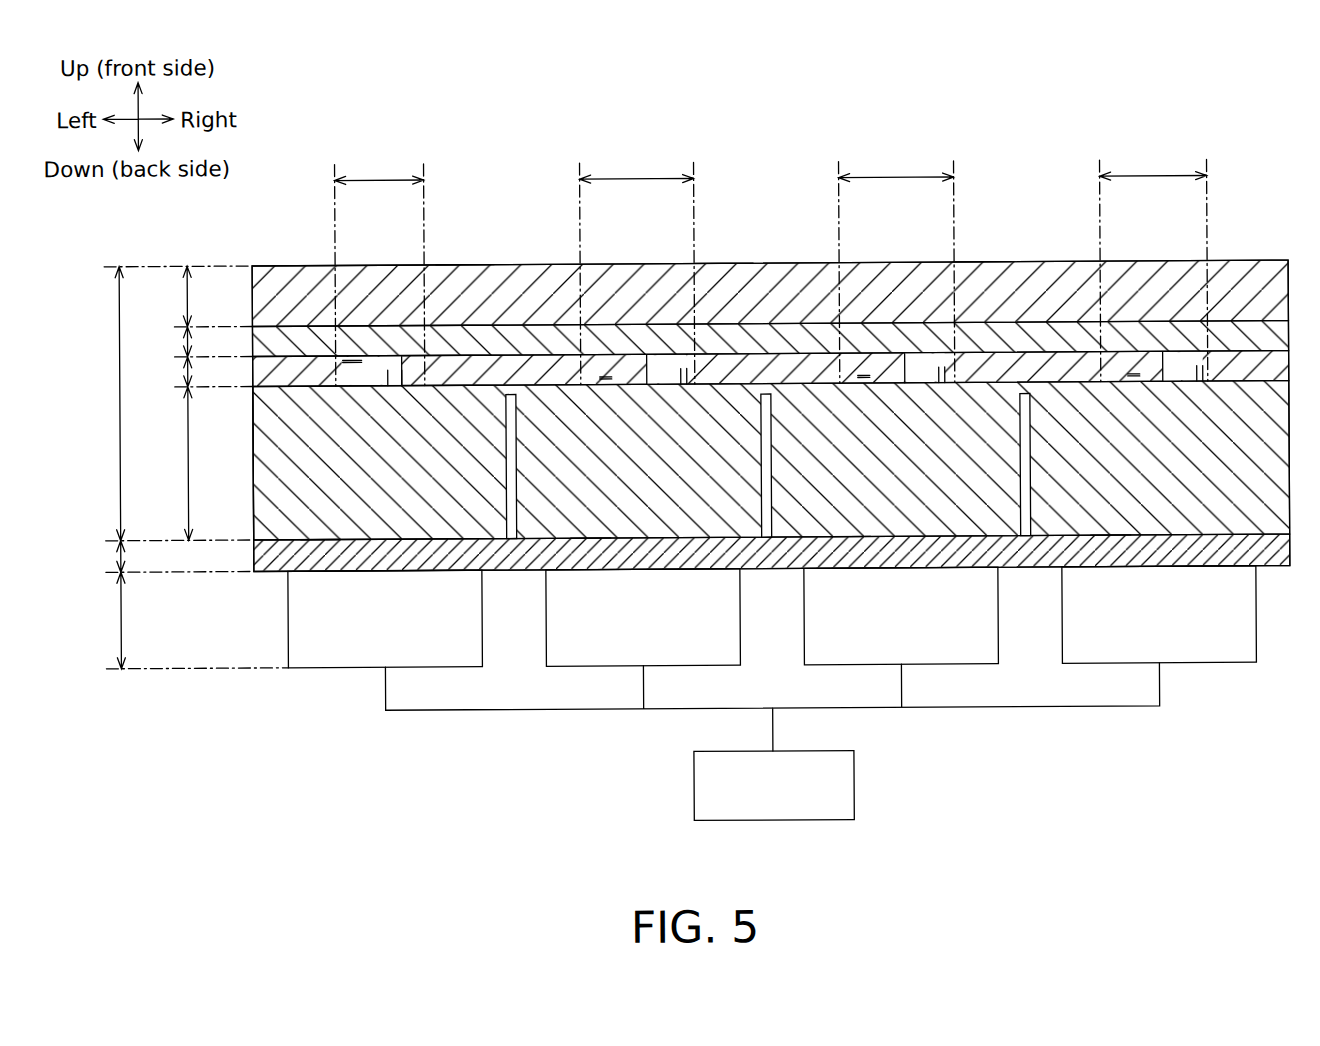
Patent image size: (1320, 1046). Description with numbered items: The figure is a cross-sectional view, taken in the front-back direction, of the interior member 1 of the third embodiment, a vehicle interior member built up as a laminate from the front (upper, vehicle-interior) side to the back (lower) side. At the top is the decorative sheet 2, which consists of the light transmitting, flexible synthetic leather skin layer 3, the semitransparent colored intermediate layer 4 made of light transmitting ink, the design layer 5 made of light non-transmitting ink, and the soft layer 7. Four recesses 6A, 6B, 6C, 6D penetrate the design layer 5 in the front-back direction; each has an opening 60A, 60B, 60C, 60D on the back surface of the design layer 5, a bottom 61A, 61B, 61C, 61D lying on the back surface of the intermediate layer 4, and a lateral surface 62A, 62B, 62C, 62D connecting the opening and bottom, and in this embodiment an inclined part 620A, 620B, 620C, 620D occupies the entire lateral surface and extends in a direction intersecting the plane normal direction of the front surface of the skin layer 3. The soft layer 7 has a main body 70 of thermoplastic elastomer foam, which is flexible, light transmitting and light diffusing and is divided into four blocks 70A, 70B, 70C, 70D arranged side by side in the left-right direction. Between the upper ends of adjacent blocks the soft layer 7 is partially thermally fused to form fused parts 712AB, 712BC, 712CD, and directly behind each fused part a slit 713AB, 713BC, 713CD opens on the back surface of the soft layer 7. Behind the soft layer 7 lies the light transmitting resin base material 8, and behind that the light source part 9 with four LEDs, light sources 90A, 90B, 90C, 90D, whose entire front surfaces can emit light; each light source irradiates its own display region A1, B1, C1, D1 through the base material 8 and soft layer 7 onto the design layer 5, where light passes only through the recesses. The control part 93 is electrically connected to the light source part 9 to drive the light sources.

The interior member 1 is at (1207, 111).
The decorative sheet 2 is at (687, 368).
The skin layer 3 is at (188, 315).
The intermediate layer 4 is at (188, 351).
The design layer 5 is at (188, 381).
The recess 6A is at (380, 371).
The recess 6B is at (687, 361).
The recess 6C is at (945, 361).
The recess 6D is at (1200, 361).
The soft layer 7 is at (188, 470).
The base material 8 is at (120, 562).
The light source part 9 is at (120, 621).
The opening 60A is at (388, 388).
The opening 60B is at (687, 388).
The opening 60C is at (945, 388).
The opening 60D is at (1203, 388).
The bottom 61A is at (402, 388).
The bottom 61B is at (681, 388).
The bottom 61C is at (939, 388).
The bottom 61D is at (1197, 388).
The lateral surface 62A is at (363, 363).
The lateral surface 62B is at (601, 381).
The lateral surface 62C is at (859, 381).
The lateral surface 62D is at (1130, 381).
The inclined part 620A is at (306, 200).
The inclined part 620B is at (549, 202).
The inclined part 620C is at (808, 203).
The inclined part 620D is at (1066, 204).
The main body 70 is at (253, 442).
The block 70A is at (318, 541).
The block 70B is at (588, 541).
The block 70C is at (848, 541).
The block 70D is at (1108, 541).
The fused part 712AB is at (511, 398).
The fused part 712BC is at (768, 399).
The fused part 712CD is at (1026, 400).
The slit 713AB is at (506, 480).
The slit 713BC is at (761, 482).
The slit 713CD is at (1020, 484).
The light source 90A is at (347, 668).
The light source 90B is at (607, 668).
The light source 90C is at (865, 668).
The light source 90D is at (1122, 668).
The control part 93 is at (853, 772).
The display region A1 is at (380, 181).
The display region B1 is at (638, 181).
The display region C1 is at (897, 181).
The display region D1 is at (1155, 181).